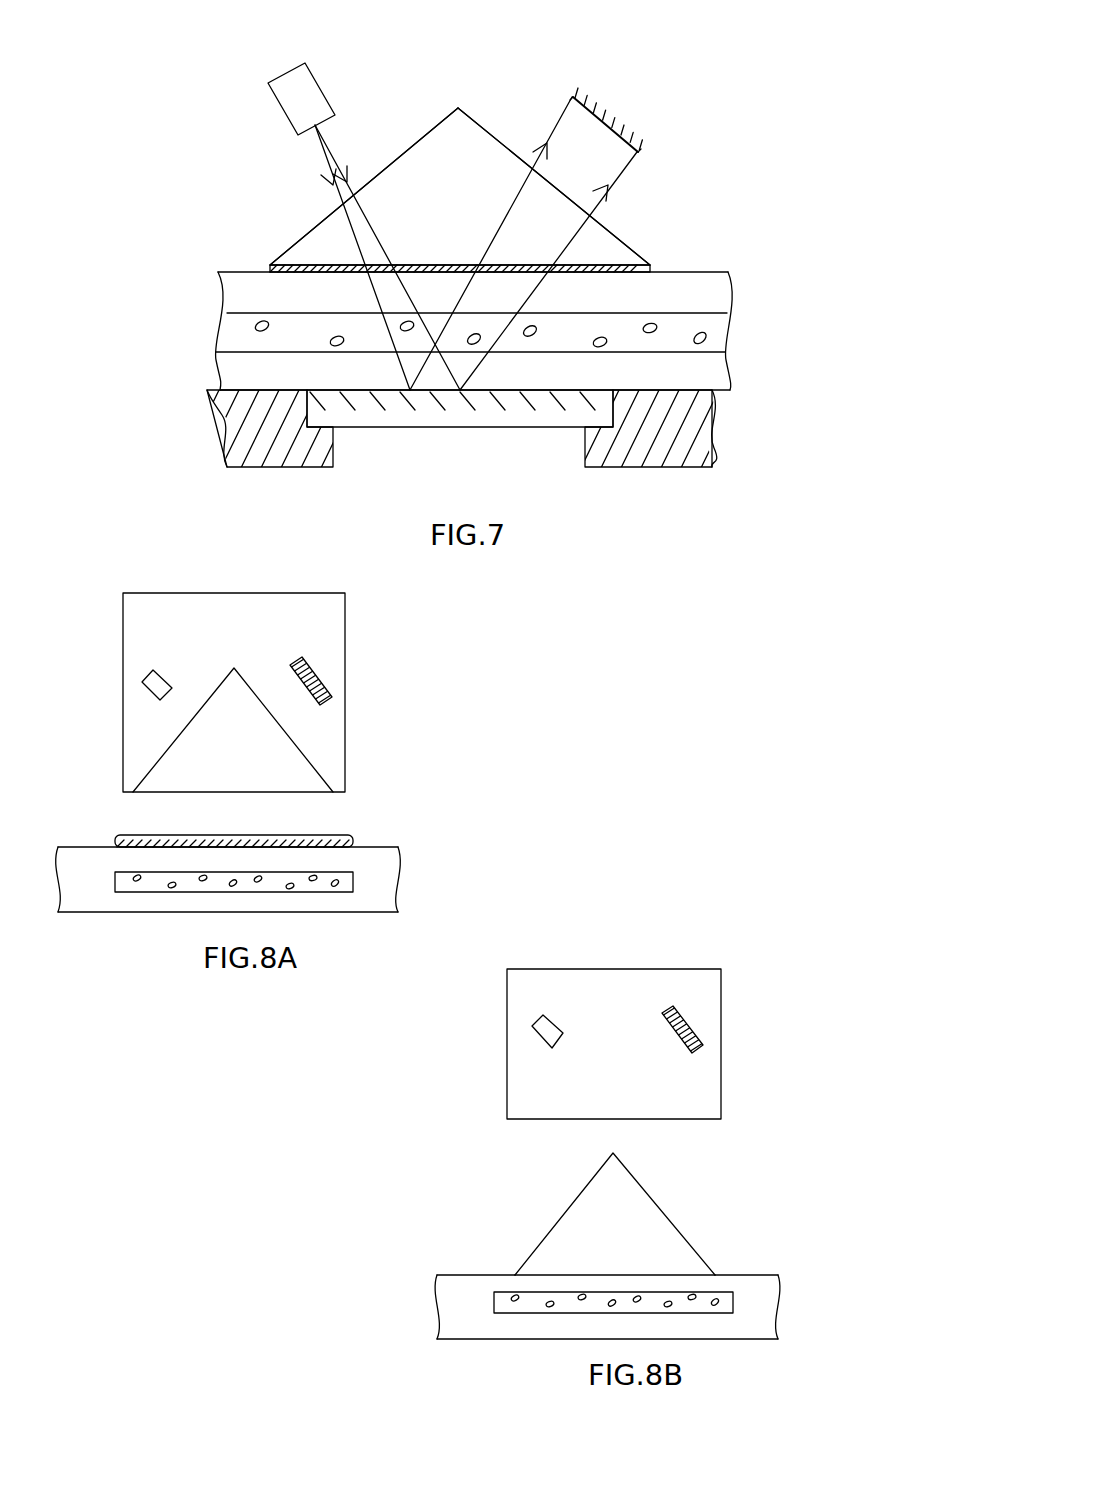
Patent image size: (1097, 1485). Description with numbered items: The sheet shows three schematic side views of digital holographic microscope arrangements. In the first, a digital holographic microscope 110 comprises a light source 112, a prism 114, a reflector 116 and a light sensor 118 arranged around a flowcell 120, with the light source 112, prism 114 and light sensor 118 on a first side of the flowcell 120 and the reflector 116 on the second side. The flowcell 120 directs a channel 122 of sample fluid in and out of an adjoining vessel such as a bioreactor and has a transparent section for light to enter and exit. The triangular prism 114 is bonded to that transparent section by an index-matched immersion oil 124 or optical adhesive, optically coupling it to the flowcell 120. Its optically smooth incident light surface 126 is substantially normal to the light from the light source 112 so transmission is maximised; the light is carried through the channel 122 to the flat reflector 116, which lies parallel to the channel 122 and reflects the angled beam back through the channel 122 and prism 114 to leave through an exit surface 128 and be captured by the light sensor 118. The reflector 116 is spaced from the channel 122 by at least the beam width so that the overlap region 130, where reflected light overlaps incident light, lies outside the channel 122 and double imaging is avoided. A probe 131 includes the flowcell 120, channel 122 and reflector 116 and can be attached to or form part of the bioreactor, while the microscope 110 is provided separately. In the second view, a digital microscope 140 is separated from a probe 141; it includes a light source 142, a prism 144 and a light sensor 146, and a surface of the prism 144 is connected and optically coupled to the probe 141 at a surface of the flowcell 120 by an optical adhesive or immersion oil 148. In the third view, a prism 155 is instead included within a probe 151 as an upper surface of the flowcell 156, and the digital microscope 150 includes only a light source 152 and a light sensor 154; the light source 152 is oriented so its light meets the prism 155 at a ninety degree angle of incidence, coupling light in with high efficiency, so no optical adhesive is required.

In FIG. 7, the digital holographic microscope 110 is at (752, 117).
In FIG. 7, the light source 112 is at (297, 83).
In FIG. 7, the prism 114 is at (448, 153).
In FIG. 7, the reflector 116 is at (503, 413).
In FIG. 7, the light sensor 118 is at (585, 102).
In FIG. 7, the flowcell 120 is at (695, 287).
In FIG. 8A, the flowcell 120 is at (380, 882).
In FIG. 8B, the flowcell 120 is at (763, 1303).
In FIG. 7, the channel 122 is at (708, 322).
In FIG. 7, the immersion oil 124 is at (270, 267).
In FIG. 7, the incident light surface 126 is at (390, 163).
In FIG. 7, the exit surface 128 is at (500, 137).
In FIG. 7, the overlap region 130 is at (438, 375).
In FIG. 7, the probe 131 is at (178, 313).
In FIG. 8A, the digital microscope 140 is at (168, 590).
In FIG. 8A, the probe 141 is at (437, 853).
In FIG. 8A, the light source 142 is at (155, 687).
In FIG. 8A, the prism 144 is at (266, 762).
In FIG. 8A, the light sensor 146 is at (313, 675).
In FIG. 8A, the immersion oil 148 is at (317, 840).
In FIG. 8B, the digital microscope 150 is at (727, 950).
In FIG. 8B, the probe 151 is at (512, 1225).
In FIG. 8B, the light source 152 is at (542, 1030).
In FIG. 8B, the light sensor 154 is at (687, 1025).
In FIG. 8B, the prism 155 is at (587, 1222).
In FIG. 8B, the flowcell 156 is at (737, 1282).